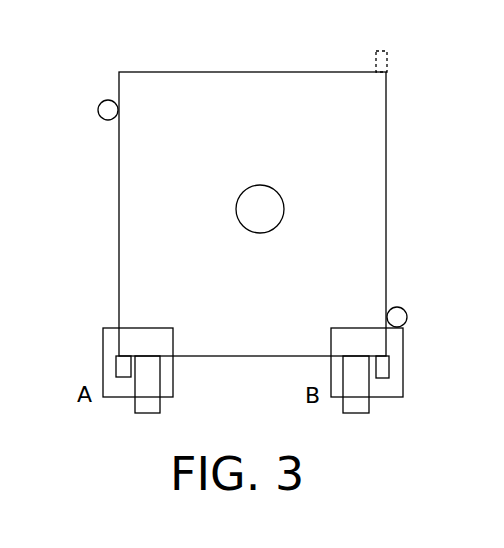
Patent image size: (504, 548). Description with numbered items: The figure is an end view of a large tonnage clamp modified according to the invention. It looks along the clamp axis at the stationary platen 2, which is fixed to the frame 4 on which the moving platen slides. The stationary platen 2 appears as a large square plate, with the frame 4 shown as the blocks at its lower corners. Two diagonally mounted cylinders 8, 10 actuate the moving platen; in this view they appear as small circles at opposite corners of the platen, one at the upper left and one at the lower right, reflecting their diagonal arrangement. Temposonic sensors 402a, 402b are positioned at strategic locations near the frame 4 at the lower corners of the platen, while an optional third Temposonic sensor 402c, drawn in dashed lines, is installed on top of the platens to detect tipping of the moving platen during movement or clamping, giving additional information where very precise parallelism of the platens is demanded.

The stationary platen 2 is at (378, 141).
The frame 4 is at (143, 404).
The cylinder 8 is at (100, 103).
The cylinder 10 is at (407, 313).
The Temposonic sensor 402a is at (118, 363).
The Temposonic sensor 402b is at (382, 367).
The third Temposonic sensor 402c is at (389, 57).